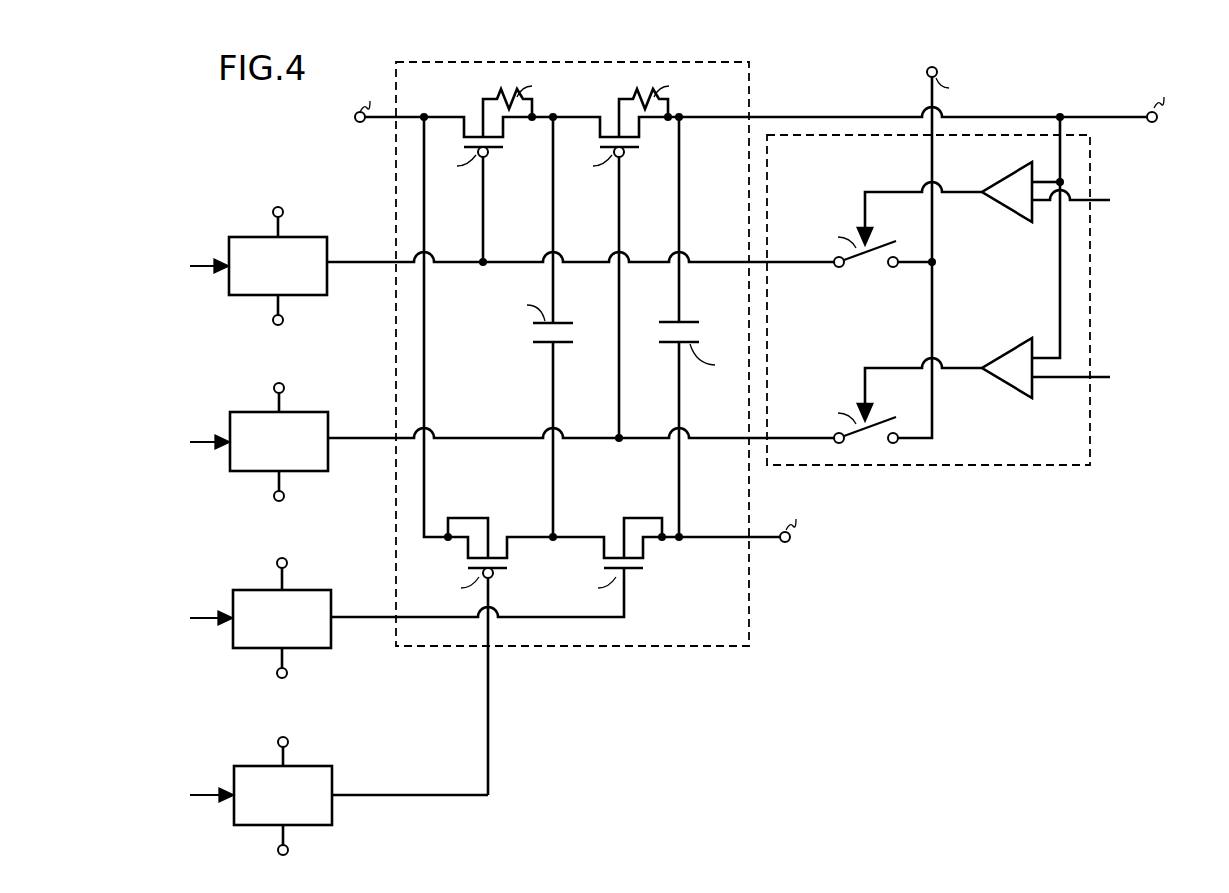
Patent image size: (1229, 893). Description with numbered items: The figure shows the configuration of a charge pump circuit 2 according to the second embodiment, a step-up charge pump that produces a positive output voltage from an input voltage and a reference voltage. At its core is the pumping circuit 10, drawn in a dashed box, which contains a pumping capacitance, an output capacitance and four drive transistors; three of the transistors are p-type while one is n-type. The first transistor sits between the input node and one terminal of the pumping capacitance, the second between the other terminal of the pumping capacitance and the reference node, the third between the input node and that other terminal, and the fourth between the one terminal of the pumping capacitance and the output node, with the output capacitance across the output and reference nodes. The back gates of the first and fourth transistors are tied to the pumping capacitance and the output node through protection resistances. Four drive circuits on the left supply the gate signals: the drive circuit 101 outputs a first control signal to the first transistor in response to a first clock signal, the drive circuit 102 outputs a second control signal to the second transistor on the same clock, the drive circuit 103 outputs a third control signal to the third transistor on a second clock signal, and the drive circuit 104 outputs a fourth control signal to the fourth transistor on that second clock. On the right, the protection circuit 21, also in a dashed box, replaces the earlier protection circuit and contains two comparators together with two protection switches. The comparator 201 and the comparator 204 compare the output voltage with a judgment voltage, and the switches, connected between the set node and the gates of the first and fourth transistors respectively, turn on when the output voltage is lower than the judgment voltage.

The charge pump circuit 2 is at (1060, 752).
The pumping circuit 10 is at (705, 647).
The protection circuit 21 is at (1045, 465).
The drive circuit 101 is at (305, 237).
The drive circuit 102 is at (308, 590).
The drive circuit 103 is at (309, 766).
The drive circuit 104 is at (306, 412).
The comparator 201 is at (1020, 164).
The comparator 204 is at (1020, 340).